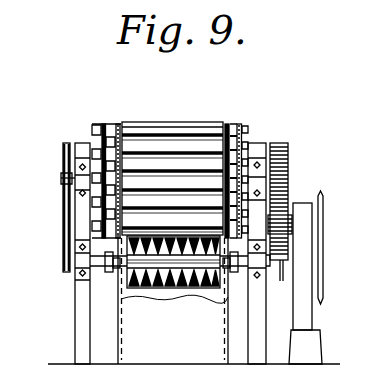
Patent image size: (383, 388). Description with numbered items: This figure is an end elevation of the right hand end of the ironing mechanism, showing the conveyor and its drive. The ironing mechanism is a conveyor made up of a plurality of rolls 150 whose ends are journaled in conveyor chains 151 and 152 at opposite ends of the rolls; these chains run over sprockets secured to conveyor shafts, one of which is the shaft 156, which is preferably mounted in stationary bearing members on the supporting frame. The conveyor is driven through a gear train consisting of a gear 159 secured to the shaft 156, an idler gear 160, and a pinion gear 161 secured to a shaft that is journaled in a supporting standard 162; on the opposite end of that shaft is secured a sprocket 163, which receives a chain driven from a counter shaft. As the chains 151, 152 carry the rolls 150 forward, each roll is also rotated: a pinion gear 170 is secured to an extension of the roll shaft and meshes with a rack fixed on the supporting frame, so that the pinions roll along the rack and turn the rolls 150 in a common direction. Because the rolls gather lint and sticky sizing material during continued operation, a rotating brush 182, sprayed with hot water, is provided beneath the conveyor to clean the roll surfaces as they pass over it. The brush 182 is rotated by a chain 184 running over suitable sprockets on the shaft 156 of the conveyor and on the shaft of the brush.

The rolls 150 is at (193, 147).
The conveyor chain 151 is at (105, 124).
The conveyor chain 152 is at (229, 128).
The shaft 156 is at (61, 179).
The gear 159 is at (286, 152).
The idler gear 160 is at (288, 218).
The pinion gear 161 is at (281, 264).
The supporting standard 162 is at (303, 283).
The sprocket 163 is at (323, 219).
The pinion gear 170 is at (247, 150).
The rotating brush 182 is at (149, 288).
The chain 184 is at (70, 216).